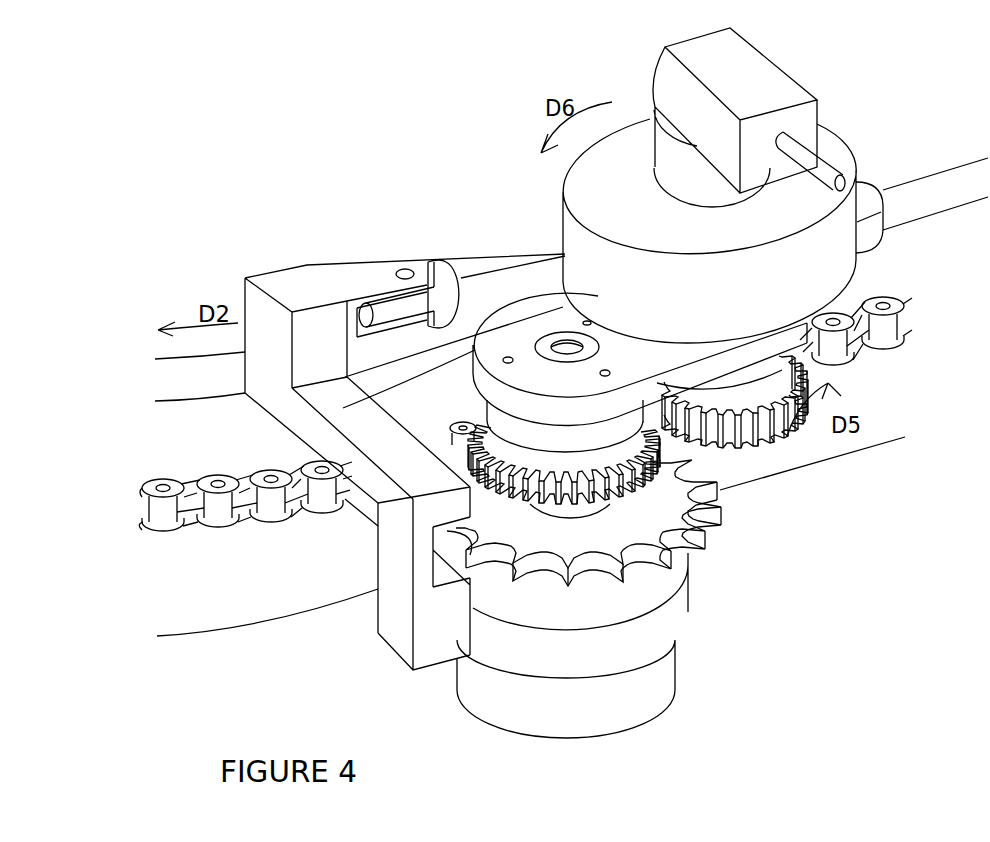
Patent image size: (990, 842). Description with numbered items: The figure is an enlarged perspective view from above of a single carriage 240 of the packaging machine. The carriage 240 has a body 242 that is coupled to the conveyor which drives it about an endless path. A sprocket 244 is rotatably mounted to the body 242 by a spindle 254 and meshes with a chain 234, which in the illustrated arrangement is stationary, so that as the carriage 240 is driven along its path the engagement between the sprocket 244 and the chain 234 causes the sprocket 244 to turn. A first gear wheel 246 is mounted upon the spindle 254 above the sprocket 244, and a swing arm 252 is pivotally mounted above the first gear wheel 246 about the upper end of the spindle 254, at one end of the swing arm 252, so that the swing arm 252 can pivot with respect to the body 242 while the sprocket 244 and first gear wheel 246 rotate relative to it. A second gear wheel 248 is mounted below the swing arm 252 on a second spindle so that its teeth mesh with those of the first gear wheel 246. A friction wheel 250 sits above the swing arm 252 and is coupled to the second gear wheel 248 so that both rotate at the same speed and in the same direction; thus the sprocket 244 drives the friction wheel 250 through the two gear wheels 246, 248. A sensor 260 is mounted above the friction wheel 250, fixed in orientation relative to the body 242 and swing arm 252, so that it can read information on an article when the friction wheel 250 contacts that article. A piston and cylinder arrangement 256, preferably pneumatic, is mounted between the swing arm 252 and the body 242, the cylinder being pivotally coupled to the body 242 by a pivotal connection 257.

The carriage 240 is at (291, 158).
The body 242 is at (643, 680).
The sprocket 244 is at (688, 555).
The first gear wheel 246 is at (690, 483).
The second gear wheel 248 is at (753, 437).
The friction wheel 250 is at (826, 258).
The swing arm 252 is at (549, 315).
The spindle 254 is at (335, 408).
The piston and cylinder arrangement 256 is at (481, 277).
The pivotal connection 257 is at (405, 269).
The sensor 260 is at (774, 98).
The chain 234 is at (888, 351).